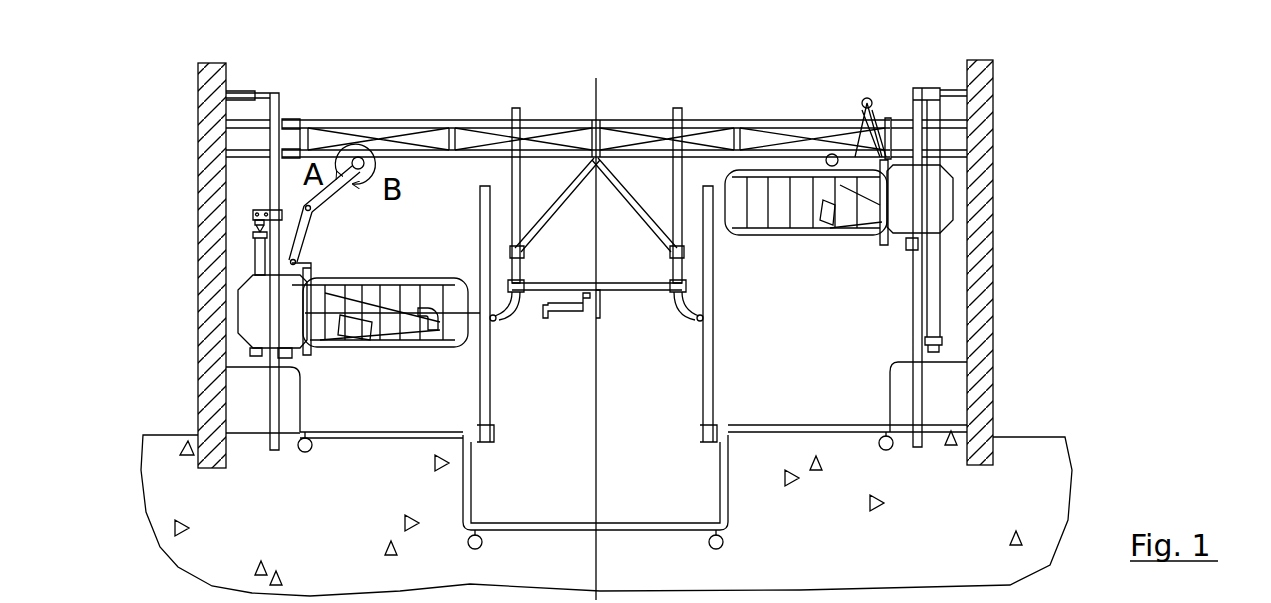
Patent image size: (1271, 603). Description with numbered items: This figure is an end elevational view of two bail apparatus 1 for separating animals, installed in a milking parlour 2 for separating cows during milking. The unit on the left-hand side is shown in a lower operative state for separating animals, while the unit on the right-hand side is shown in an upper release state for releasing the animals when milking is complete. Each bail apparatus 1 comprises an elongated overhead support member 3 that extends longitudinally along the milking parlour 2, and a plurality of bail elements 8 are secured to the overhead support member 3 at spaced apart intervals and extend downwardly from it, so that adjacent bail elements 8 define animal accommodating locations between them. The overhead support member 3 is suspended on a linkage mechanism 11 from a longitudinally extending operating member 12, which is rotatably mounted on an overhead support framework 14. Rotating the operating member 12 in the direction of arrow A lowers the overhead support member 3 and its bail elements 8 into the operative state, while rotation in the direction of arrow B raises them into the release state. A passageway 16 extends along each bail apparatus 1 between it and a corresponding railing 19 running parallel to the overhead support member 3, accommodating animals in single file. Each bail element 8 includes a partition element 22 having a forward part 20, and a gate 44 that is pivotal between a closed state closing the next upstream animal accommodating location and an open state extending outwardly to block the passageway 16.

The bail apparatus 1 is at (472, 101).
The milking parlour 2 is at (633, 450).
The overhead support member 3 is at (300, 270).
The bail element 8 is at (310, 352).
The linkage mechanism 11 is at (318, 216).
The operating member 12 is at (362, 157).
The overhead support framework 14 is at (568, 118).
The passageway 16 is at (462, 414).
The railing 19 is at (490, 392).
The forward part 20 is at (335, 347).
The partition element 22 is at (352, 346).
The gate 44 is at (410, 310).